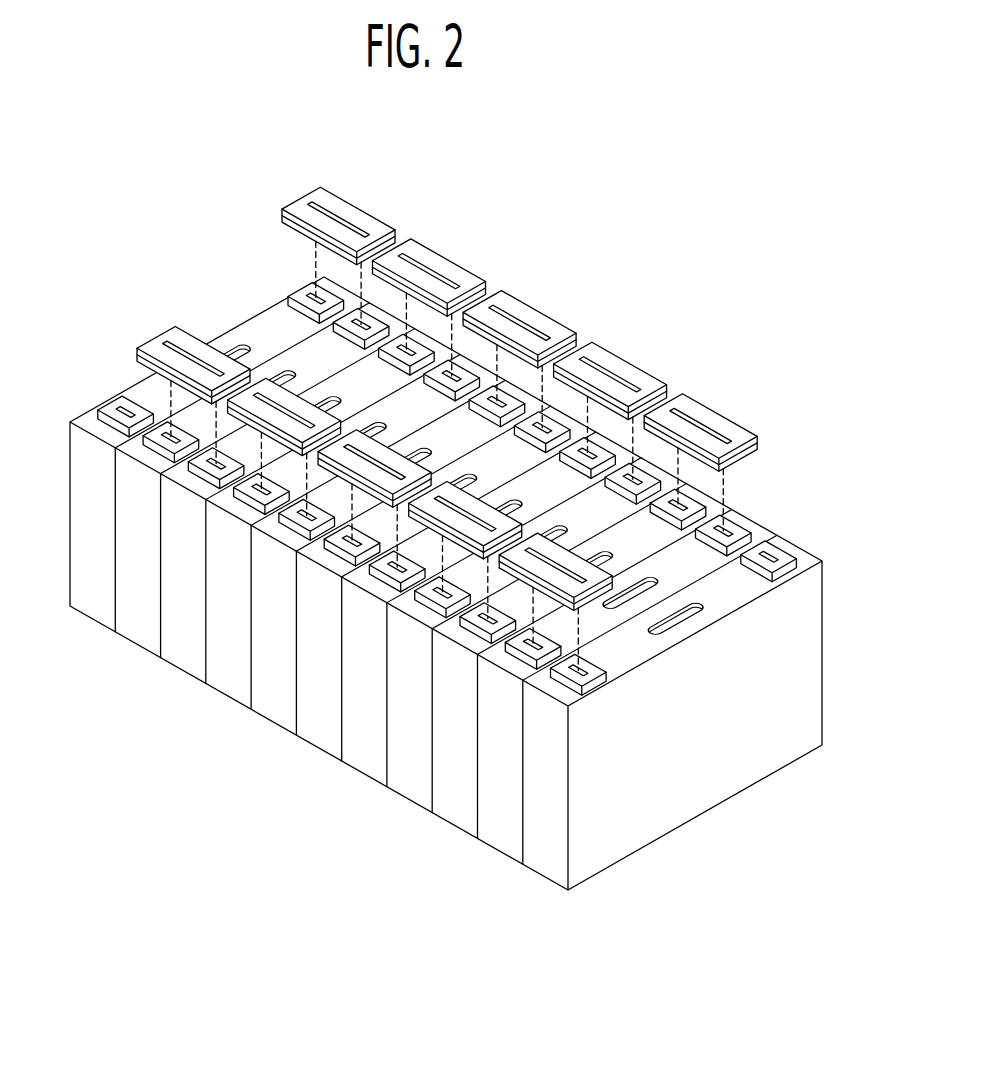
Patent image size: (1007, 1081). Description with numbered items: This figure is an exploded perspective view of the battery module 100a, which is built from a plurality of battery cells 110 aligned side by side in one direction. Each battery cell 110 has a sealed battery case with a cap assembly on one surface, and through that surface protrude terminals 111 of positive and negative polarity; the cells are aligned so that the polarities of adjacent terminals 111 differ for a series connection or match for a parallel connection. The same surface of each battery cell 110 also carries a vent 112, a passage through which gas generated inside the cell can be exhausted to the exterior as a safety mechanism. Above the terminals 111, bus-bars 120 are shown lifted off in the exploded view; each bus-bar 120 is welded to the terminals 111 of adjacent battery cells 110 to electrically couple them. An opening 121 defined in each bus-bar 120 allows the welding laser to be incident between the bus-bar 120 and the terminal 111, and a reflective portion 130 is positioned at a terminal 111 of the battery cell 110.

The battery module 100a is at (766, 195).
The battery cell 110 is at (545, 862).
The terminal 111 is at (752, 528).
The vent 112 is at (676, 622).
The bus-bar 120 is at (727, 402).
The opening 121 is at (688, 416).
The reflective portion 130 is at (722, 531).